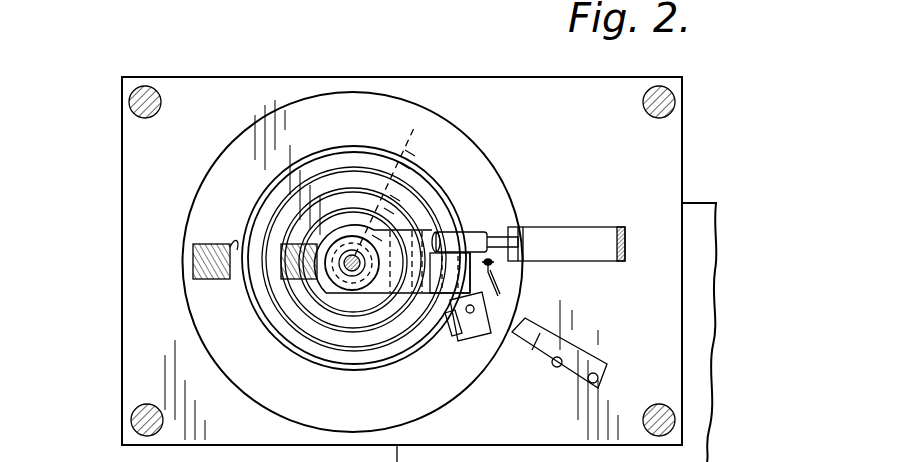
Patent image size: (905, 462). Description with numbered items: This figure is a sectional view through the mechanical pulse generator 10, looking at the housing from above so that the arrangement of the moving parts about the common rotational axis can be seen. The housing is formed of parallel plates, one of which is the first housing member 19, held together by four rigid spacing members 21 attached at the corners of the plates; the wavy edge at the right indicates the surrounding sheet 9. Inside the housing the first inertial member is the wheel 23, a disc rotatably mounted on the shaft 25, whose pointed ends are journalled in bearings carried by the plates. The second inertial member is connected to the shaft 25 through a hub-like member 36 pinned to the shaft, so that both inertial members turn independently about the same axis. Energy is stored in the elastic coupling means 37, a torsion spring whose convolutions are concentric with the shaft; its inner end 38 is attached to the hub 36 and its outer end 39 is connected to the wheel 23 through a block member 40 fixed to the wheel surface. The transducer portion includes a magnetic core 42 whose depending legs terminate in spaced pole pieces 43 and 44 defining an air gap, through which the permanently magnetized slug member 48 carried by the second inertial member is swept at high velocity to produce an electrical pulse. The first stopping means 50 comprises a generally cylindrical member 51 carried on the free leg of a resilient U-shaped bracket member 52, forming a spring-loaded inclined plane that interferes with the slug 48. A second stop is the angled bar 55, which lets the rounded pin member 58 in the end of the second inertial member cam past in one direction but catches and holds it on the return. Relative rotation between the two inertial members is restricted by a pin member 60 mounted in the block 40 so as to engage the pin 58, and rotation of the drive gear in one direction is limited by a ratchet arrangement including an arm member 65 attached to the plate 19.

The pulse generator 10 is at (200, 60).
The first housing member 19 is at (135, 295).
The sheet 9 is at (700, 262).
The rigid spacing members 21 is at (140, 102).
The wheel 23 is at (460, 150).
The elastic coupling means 37 is at (262, 323).
The hub-like member 36 is at (352, 272).
The slug member 48 is at (368, 312).
The shaft 25 is at (353, 272).
The inner end of spring 38 is at (385, 183).
The magnetic core 42 is at (192, 260).
The pole piece 43 is at (233, 248).
The pole piece 44 is at (281, 245).
The first stopping means 50 is at (480, 230).
The member 51 is at (495, 236).
The resilient bracket member 52 is at (582, 232).
The bar 55 is at (498, 297).
The pin member 58 is at (472, 271).
The pin member 60 is at (488, 307).
The block member 40 is at (458, 336).
The outer end of spring 39 is at (438, 340).
The arm member 65 is at (524, 343).